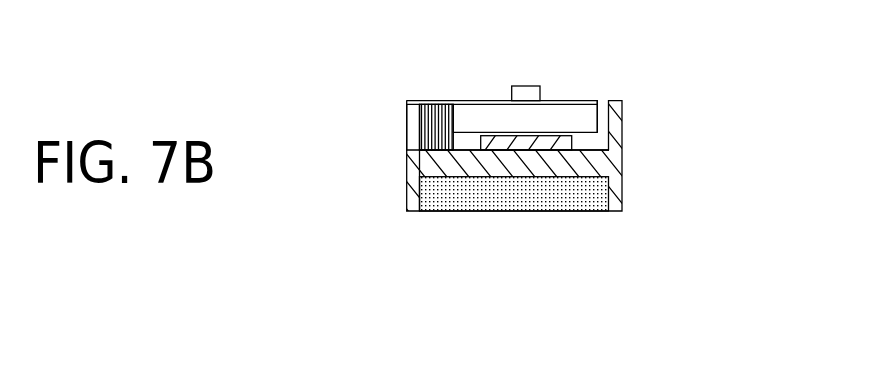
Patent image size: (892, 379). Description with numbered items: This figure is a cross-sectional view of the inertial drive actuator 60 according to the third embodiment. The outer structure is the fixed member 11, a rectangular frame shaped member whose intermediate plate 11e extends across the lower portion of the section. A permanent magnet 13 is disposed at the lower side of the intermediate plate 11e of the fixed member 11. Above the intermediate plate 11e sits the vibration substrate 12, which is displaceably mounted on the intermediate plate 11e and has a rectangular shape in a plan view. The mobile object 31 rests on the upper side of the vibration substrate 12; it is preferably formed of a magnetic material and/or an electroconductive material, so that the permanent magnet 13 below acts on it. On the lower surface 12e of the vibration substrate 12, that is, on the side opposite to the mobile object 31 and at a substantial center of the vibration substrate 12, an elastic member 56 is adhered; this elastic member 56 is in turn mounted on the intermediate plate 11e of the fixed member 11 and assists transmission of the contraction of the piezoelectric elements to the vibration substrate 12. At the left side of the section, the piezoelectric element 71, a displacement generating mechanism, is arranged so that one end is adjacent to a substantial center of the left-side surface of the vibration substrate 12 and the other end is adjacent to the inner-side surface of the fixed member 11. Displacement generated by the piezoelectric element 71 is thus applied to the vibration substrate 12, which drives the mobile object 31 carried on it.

The inertial drive actuator 60 is at (530, 352).
The fixed member 11 is at (416, 165).
The intermediate plate 11e is at (477, 166).
The vibration substrate 12 is at (598, 112).
The lower surface 12e is at (420, 148).
The permanent magnet 13 is at (567, 187).
The mobile object 31 is at (541, 91).
The elastic member 56 is at (573, 140).
The piezoelectric element 71 is at (418, 124).